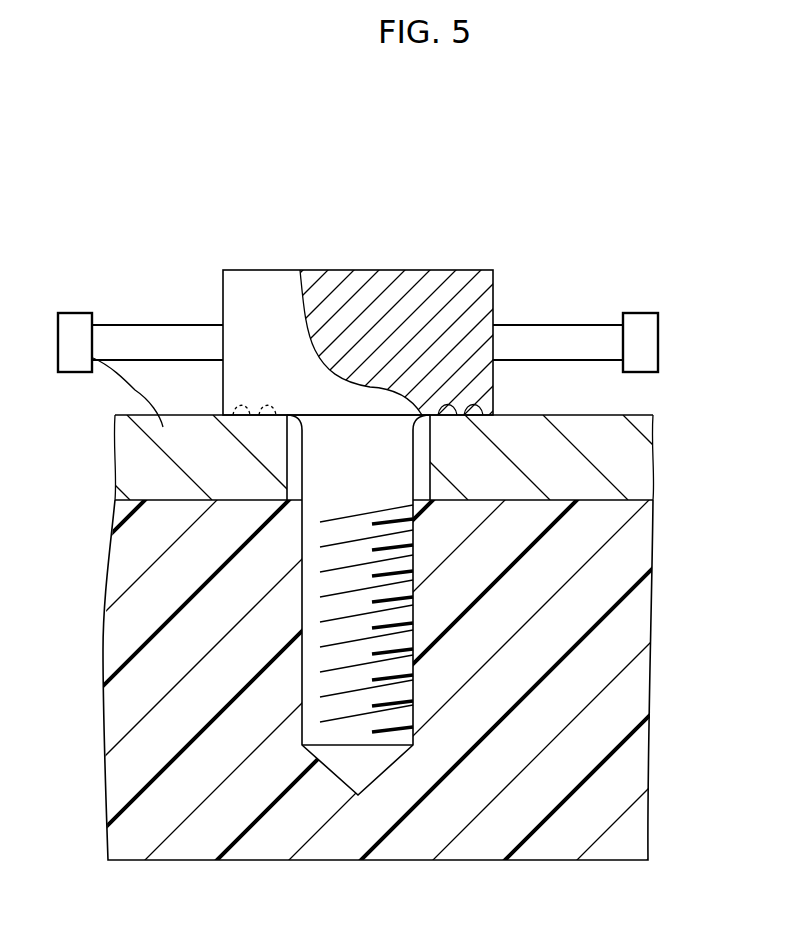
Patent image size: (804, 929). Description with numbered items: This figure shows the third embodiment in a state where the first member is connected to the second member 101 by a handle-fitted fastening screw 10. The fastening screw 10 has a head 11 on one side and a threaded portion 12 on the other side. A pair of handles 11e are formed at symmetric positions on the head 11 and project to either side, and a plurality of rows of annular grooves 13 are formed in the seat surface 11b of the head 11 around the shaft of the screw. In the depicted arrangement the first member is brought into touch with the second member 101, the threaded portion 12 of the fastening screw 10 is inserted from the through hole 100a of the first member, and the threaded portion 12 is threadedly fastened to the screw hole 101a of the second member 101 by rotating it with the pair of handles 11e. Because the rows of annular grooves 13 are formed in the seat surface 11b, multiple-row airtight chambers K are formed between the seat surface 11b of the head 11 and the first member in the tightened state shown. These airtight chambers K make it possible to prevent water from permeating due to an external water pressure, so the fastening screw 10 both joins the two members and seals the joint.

The fastening screw 10 is at (374, 232).
The head 11 is at (265, 283).
The handle 11e is at (136, 340).
The seat surface 11b is at (267, 416).
The annular grooves 13 is at (470, 404).
The airtight chambers K is at (473, 410).
The threaded portion 12 is at (318, 672).
The through hole 100a is at (432, 452).
The second member 101 is at (402, 464).
The screw hole 101a is at (413, 604).